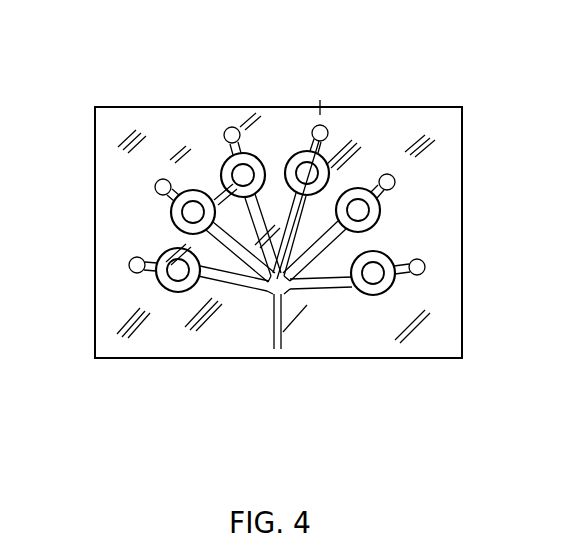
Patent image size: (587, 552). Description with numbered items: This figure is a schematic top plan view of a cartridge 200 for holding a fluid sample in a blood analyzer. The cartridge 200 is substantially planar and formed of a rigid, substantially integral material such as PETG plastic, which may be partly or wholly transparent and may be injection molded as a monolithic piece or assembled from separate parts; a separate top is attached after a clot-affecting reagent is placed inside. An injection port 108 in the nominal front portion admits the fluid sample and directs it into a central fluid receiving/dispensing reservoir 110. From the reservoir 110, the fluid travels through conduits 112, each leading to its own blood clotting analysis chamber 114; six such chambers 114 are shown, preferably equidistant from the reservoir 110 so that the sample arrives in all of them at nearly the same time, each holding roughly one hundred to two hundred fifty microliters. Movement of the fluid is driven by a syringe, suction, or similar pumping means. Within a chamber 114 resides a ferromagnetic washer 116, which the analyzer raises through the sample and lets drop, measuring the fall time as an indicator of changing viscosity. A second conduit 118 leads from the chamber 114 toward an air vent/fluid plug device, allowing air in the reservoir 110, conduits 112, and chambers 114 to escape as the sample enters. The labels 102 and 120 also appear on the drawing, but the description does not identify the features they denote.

The substrate 102 is at (453, 226).
The injection port 108 is at (279, 350).
The fluid receiving/dispensing reservoir 110 is at (274, 295).
The conduit 112 is at (270, 210).
The blood clotting analysis chamber 114 is at (174, 258).
The ferromagnetic washer 116 is at (171, 211).
The second conduit 118 is at (380, 183).
The vent port 120 is at (229, 128).
The cartridge 200 is at (445, 142).